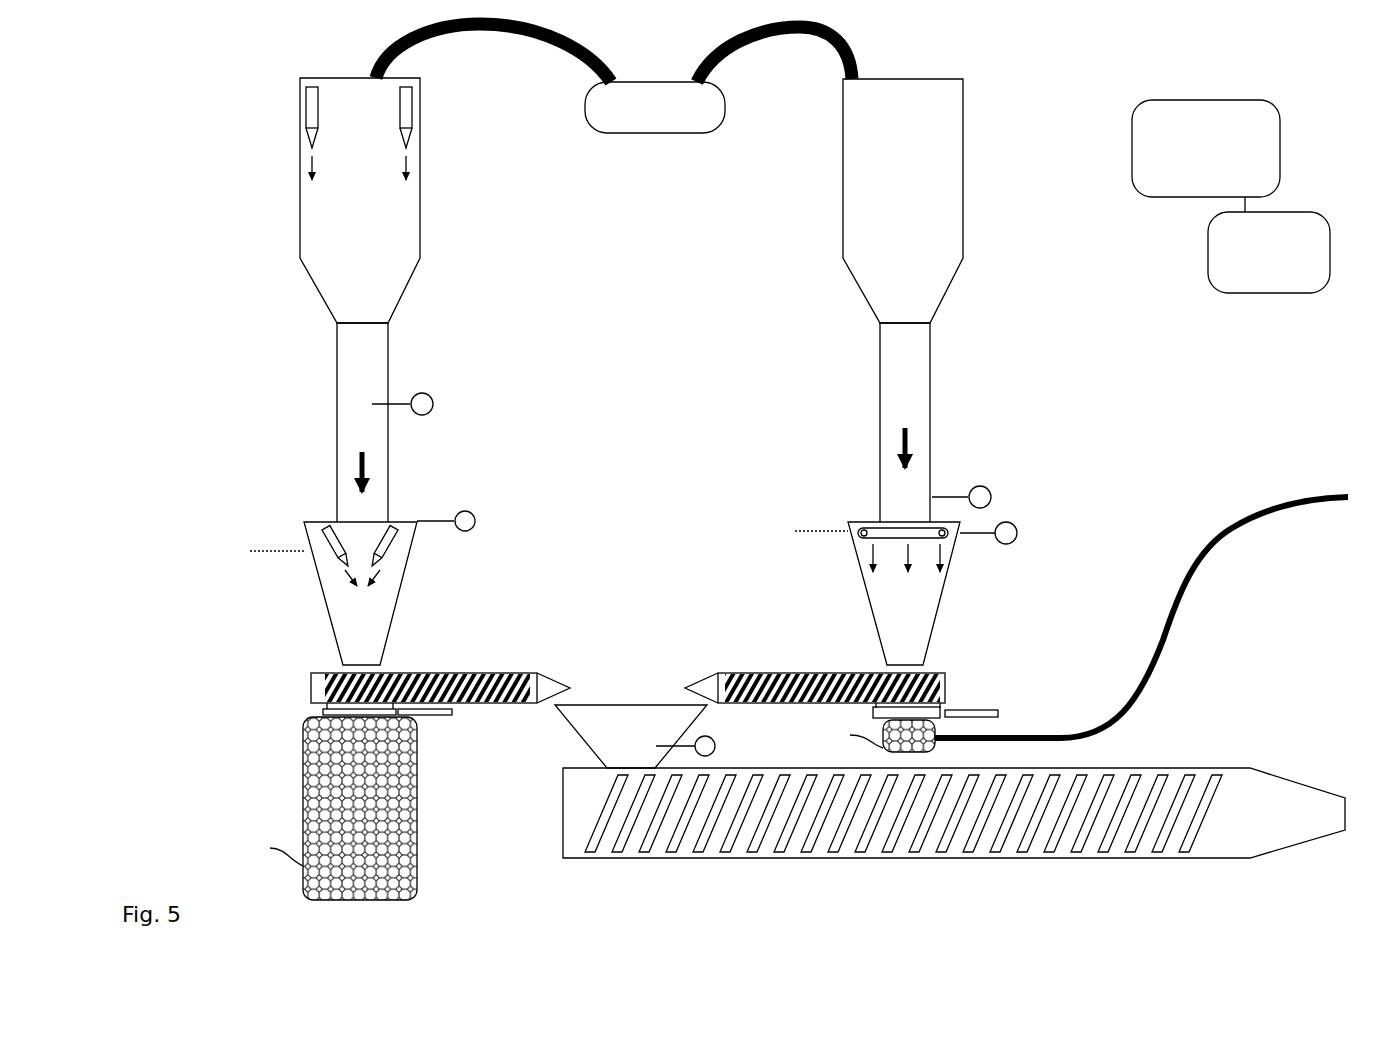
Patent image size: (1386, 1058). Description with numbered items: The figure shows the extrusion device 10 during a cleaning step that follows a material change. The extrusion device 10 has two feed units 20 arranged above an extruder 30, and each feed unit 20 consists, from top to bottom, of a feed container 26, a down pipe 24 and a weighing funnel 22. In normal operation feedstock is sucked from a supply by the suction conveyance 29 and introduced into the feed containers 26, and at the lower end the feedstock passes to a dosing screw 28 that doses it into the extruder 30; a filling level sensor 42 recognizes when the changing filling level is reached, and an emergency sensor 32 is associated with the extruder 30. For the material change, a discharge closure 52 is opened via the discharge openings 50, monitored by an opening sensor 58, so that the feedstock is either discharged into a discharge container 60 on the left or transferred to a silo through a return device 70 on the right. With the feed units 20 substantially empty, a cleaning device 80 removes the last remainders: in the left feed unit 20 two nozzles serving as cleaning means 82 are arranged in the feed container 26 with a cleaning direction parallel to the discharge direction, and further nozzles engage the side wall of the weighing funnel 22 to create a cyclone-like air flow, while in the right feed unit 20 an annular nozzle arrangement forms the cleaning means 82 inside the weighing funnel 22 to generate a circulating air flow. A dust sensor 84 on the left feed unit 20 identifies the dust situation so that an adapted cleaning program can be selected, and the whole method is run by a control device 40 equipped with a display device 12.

The extrusion device 10 is at (195, 118).
The display device 12 is at (1269, 252).
The feed unit 20 is at (465, 203).
The weighing funnel 22 is at (390, 648).
The down pipe 24 is at (388, 368).
The feed container 26 is at (420, 98).
The dosing screw 28 is at (478, 672).
The suction conveyance 29 is at (614, 78).
The extruder 30 is at (1155, 768).
The emergency sensor 32 is at (715, 746).
The control device 40 is at (1195, 100).
The filling level sensor 42 is at (470, 511).
The discharge opening 50 is at (310, 711).
The discharge closure 52 is at (420, 715).
The opening sensor 58 is at (420, 718).
The discharge container 60 is at (303, 787).
The return device 70 is at (1242, 522).
The cleaning device 80 is at (305, 233).
The cleaning means 82 is at (320, 87).
The dust sensor 84 is at (433, 404).